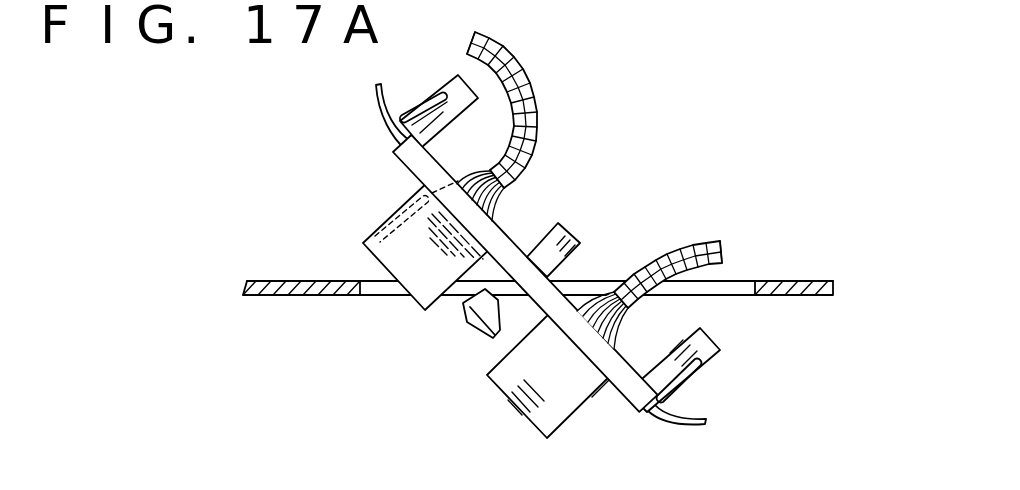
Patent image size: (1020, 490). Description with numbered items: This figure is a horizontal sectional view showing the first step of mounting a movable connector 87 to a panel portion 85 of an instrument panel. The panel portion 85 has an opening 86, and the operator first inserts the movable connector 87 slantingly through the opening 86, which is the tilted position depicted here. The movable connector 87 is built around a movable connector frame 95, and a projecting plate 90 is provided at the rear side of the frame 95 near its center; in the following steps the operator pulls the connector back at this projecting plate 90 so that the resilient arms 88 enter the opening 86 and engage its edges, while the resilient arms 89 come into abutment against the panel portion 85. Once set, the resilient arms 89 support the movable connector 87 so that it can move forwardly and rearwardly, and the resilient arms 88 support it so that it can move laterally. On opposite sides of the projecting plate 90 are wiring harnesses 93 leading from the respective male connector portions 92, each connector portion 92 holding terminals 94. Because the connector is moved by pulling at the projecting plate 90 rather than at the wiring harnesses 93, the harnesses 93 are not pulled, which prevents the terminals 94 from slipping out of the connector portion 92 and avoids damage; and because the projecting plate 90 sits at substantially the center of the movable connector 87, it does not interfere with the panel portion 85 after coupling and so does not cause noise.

The panel portion 85 is at (802, 301).
The opening 86 is at (733, 295).
The movable connector 87 is at (486, 384).
The resilient arms 88 is at (693, 395).
The resilient arms 89 is at (678, 422).
The projecting plate 90 is at (570, 226).
The male connector portion 92 is at (363, 244).
The wiring harness 93 is at (674, 247).
The terminals 94 is at (374, 225).
The movable connector frame 95 is at (613, 388).